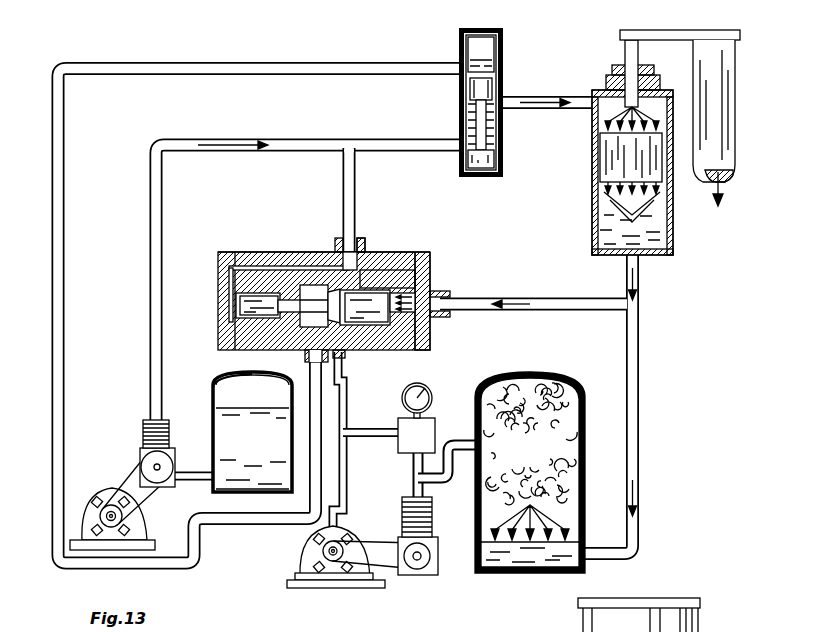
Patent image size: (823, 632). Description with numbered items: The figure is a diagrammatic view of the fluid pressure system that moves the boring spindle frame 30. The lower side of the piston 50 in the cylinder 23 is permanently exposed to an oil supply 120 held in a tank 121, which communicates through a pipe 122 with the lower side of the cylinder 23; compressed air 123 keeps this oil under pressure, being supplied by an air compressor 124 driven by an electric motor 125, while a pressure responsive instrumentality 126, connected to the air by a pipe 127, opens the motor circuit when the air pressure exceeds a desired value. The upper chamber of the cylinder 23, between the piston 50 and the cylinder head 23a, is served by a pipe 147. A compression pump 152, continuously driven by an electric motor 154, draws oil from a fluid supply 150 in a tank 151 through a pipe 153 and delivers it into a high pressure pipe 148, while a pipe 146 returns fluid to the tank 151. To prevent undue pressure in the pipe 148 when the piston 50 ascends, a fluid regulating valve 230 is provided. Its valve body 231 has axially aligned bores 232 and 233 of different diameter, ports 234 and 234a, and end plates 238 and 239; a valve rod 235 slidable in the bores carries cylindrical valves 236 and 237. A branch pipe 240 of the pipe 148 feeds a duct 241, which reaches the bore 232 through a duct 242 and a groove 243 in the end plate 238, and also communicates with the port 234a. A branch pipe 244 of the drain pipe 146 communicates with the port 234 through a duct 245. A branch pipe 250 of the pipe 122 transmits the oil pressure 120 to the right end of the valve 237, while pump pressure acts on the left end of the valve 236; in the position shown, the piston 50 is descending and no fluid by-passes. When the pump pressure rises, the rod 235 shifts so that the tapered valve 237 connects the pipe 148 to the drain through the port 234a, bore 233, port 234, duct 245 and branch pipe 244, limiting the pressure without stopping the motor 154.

The cylinder 23 is at (598, 192).
The cylinder head 23a is at (606, 88).
The spindle frame 30 is at (732, 132).
The piston 50 is at (600, 163).
The oil supply 120 is at (660, 222).
The tank 121 is at (578, 512).
The pipe 122 is at (643, 490).
The compressed air 123 is at (565, 458).
The air compressor 124 is at (430, 573).
The electric motor 125 is at (308, 570).
The pressure responsive instrumentality 126 is at (430, 423).
The pipe 127 is at (413, 470).
The pipe 146 is at (246, 63).
The pipe 147 is at (542, 96).
The pipe 148 is at (318, 138).
The fluid supply 150 is at (237, 490).
The tank 151 is at (212, 389).
The compression pump 152 is at (145, 458).
The pipe 153 is at (190, 470).
The electric motor 154 is at (88, 520).
The fluid regulating valve 230 is at (398, 265).
The valve body 231 is at (378, 256).
The bore 232 is at (292, 300).
The bore 233 is at (420, 299).
The port 234 is at (318, 286).
The port 234a is at (350, 328).
The valve rod 235 is at (298, 312).
The cylindrical valve 236 is at (237, 314).
The cylindrical valve 237 is at (388, 318).
The end plate 238 is at (226, 258).
The end plate 239 is at (432, 340).
The branch pipe 240 is at (355, 168).
The duct 241 is at (364, 240).
The duct 242 is at (258, 266).
The groove 243 is at (230, 290).
The branch pipe 244 is at (341, 378).
The duct 245 is at (310, 331).
The branch pipe 250 is at (572, 304).